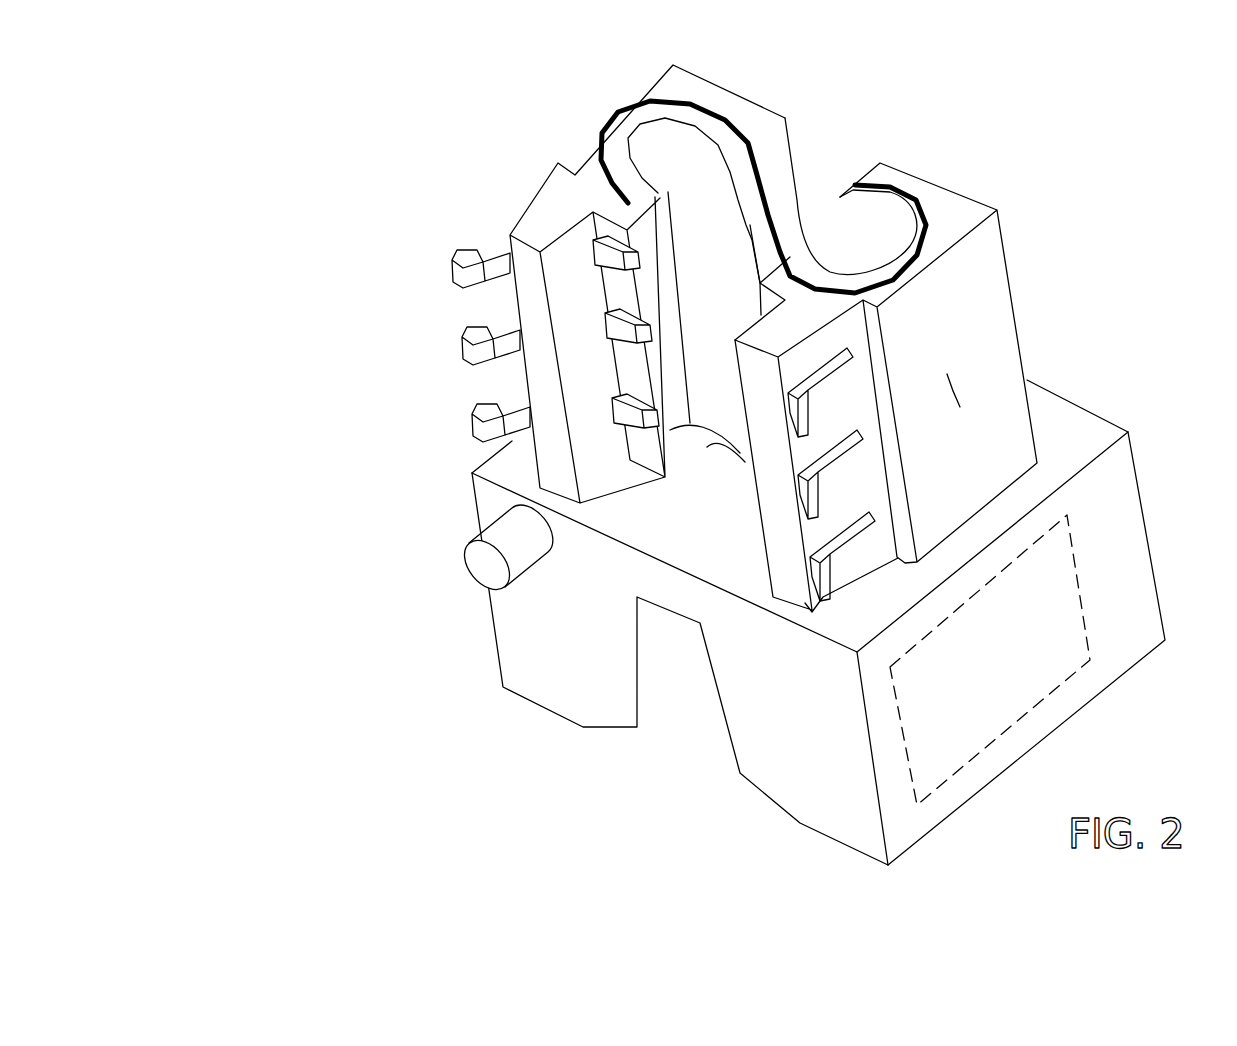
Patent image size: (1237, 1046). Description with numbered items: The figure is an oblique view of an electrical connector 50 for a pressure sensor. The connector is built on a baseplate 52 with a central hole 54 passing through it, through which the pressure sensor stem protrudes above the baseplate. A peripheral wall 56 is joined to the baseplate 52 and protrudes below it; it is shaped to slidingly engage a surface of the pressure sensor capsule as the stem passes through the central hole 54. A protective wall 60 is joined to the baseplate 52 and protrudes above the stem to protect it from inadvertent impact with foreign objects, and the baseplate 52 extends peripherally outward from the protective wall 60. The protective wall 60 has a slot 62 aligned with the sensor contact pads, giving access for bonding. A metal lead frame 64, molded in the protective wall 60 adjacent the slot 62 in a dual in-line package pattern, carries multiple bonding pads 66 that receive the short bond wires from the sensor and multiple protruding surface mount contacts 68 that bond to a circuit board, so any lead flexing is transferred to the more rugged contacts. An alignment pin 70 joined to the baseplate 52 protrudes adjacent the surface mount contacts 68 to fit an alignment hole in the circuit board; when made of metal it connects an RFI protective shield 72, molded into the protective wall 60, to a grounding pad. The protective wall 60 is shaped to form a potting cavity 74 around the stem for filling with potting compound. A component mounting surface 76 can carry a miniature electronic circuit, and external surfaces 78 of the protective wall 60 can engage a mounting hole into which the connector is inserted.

The electrical connector 50 is at (738, 448).
The baseplate 52 is at (796, 614).
The central hole 54 is at (712, 440).
The peripheral wall 56 is at (1055, 648).
The protective wall 60 is at (935, 387).
The slot 62 is at (565, 380).
The metal lead frame 64 is at (362, 248).
The bonding pads 66 is at (627, 420).
The surface mount contacts 68 is at (453, 262).
The alignment pin 70 is at (492, 568).
The RFI protective shield 72 is at (703, 108).
The potting cavity 74 is at (693, 165).
The component mounting surface 76 is at (1047, 702).
The external surfaces 78 is at (956, 400).